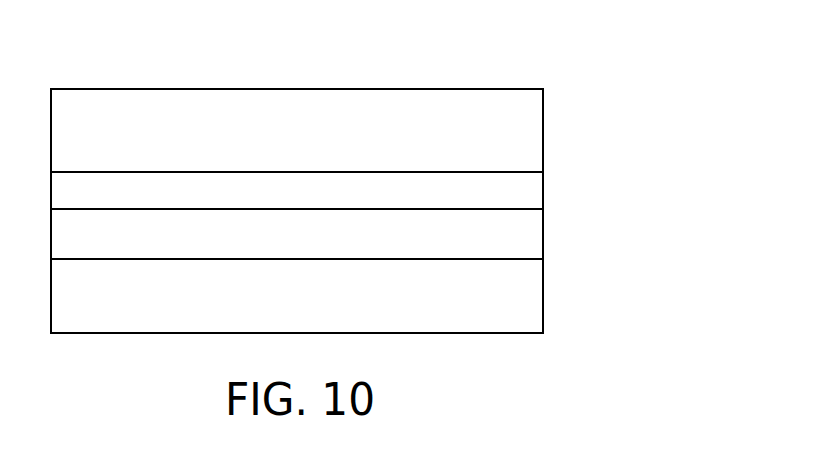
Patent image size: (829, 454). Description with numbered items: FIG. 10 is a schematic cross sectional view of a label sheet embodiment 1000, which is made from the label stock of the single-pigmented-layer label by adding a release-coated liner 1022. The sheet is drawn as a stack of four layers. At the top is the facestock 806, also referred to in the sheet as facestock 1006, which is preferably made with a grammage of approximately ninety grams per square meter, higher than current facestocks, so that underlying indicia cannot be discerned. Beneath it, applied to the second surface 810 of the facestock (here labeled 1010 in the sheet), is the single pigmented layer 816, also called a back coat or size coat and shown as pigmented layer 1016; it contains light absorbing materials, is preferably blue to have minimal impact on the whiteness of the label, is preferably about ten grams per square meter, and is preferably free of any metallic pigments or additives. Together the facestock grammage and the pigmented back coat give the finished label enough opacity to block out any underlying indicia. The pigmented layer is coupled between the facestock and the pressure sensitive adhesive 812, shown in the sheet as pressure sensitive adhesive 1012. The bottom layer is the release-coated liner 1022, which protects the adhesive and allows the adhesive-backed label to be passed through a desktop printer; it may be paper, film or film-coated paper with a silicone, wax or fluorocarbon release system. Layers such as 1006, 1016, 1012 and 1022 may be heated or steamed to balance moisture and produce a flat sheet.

The label sheet embodiment 1000 is at (567, 85).
The facestock layer 1006 is at (374, 130).
The facestock 806 is at (535, 127).
The pigmented layer 1016 is at (374, 188).
The pigmented layer 816 is at (535, 187).
The pressure sensitive adhesive 1012 is at (374, 234).
The pressure sensitive adhesive 812 is at (535, 243).
The release-coated liner 1022 is at (535, 309).
The interface 1010 is at (297, 277).
The second surface 810 is at (448, 180).